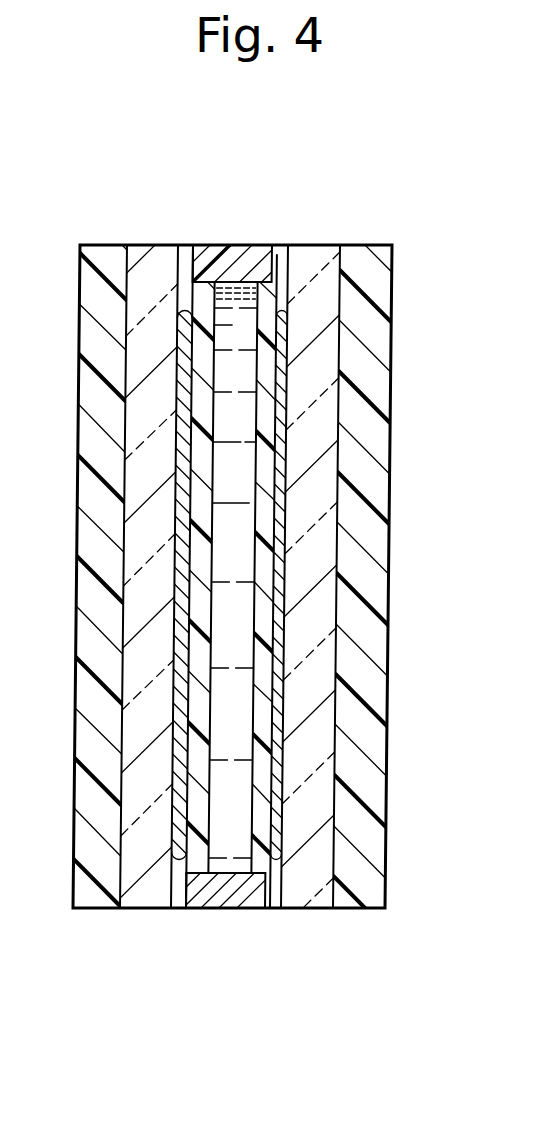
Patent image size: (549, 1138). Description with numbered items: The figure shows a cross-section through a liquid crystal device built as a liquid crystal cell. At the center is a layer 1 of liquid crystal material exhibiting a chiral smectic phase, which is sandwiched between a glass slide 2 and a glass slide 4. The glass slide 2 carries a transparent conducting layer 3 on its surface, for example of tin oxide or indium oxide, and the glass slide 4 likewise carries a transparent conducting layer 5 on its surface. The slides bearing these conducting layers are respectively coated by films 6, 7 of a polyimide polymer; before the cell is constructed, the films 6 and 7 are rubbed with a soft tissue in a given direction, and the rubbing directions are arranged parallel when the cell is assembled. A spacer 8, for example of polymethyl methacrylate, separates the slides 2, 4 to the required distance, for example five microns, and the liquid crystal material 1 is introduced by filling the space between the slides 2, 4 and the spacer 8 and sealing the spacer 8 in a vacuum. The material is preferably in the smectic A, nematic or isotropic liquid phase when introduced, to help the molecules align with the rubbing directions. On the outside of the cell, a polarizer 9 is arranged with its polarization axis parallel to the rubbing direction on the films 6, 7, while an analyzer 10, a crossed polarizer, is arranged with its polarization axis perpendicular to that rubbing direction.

The layer of liquid crystal material 1 is at (238, 322).
The glass slide 2 is at (150, 276).
The transparent conducting layer 3 is at (176, 605).
The glass slide 4 is at (307, 258).
The transparent conducting layer 5 is at (285, 447).
The film of polyimide polymer 6 is at (194, 540).
The film of polyimide polymer 7 is at (267, 522).
The spacer 8 is at (213, 258).
The polarizer 9 is at (92, 455).
The analyzer 10 is at (360, 254).